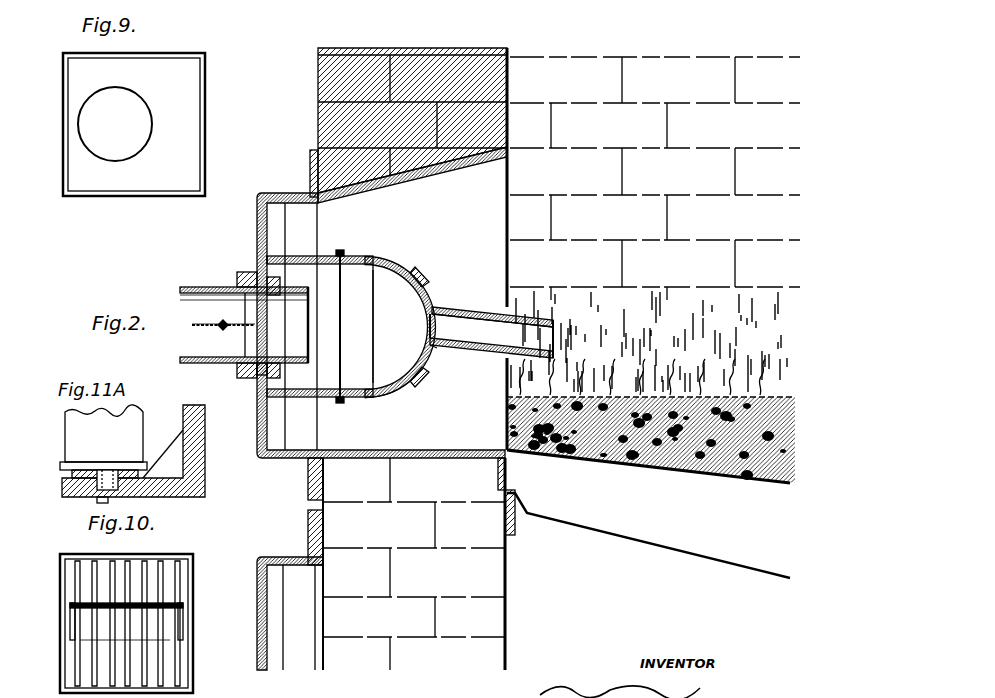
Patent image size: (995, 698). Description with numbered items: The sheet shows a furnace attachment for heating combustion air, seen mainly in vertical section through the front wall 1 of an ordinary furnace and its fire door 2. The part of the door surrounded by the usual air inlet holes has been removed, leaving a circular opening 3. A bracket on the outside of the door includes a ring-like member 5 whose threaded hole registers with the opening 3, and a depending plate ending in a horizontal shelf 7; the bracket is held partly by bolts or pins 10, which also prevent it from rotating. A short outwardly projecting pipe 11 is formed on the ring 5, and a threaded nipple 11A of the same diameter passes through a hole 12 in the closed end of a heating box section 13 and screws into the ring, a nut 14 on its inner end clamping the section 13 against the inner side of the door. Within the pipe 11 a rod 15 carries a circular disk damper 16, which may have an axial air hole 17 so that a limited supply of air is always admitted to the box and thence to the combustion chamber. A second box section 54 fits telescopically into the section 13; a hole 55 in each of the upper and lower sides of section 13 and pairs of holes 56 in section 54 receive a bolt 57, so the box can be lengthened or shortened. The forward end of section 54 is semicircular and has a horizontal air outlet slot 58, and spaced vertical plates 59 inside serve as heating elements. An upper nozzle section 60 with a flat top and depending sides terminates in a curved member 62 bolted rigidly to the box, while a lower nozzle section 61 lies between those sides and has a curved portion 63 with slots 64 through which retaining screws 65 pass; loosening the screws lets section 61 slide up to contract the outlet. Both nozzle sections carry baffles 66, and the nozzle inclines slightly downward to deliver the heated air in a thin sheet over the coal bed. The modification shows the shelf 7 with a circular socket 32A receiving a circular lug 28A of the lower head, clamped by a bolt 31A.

In FIG. 2, the front wall 1 is at (318, 70).
In FIG. 2, the fire door 2 is at (257, 218).
In FIG. 2, the circular opening 3 is at (259, 363).
In FIG. 2, the ring-like member 5 is at (240, 378).
In FIG. 11A, the horizontal ledge or shelf 7 is at (62, 492).
In FIG. 2, the bolts or pins 10 is at (238, 281).
In FIG. 2, the outwardly projecting pipe 11 is at (203, 363).
In FIG. 2, the threaded pipe or nipple 11A is at (290, 305).
In FIG. 9, the hole 12 is at (96, 127).
In FIG. 2, the heating box section 13 is at (290, 256).
In FIG. 9, the heating box section 13 is at (205, 108).
In FIG. 2, the nut 14 is at (279, 372).
In FIG. 2, the rod 15 is at (204, 356).
In FIG. 2, the damper 16 is at (247, 325).
In FIG. 2, the axial air hole 17 is at (216, 324).
In FIG. 11A, the circular lug 28A is at (96, 483).
In FIG. 11A, the bolt 31A is at (98, 498).
In FIG. 11A, the circular socket 32A is at (95, 470).
In FIG. 2, the heating box section 54 is at (388, 398).
In FIG. 10, the heating box section 54 is at (62, 568).
In FIG. 2, the hole 55 is at (340, 401).
In FIG. 2, the holes 56 is at (357, 257).
In FIG. 2, the bolt 57 is at (342, 325).
In FIG. 2, the horizontal air outlet slot 58 is at (430, 322).
In FIG. 10, the horizontal air outlet slot 58 is at (168, 620).
In FIG. 2, the vertical plates 59 is at (383, 297).
In FIG. 10, the vertical plates 59 is at (148, 590).
In FIG. 2, the upper nozzle section 60 is at (446, 311).
In FIG. 2, the lower nozzle section 61 is at (490, 354).
In FIG. 2, the curved member 62 is at (422, 285).
In FIG. 2, the curved portion 63 is at (410, 392).
In FIG. 2, the slots 64 is at (424, 383).
In FIG. 2, the retaining screws 65 is at (437, 349).
In FIG. 2, the baffles 66 is at (497, 316).